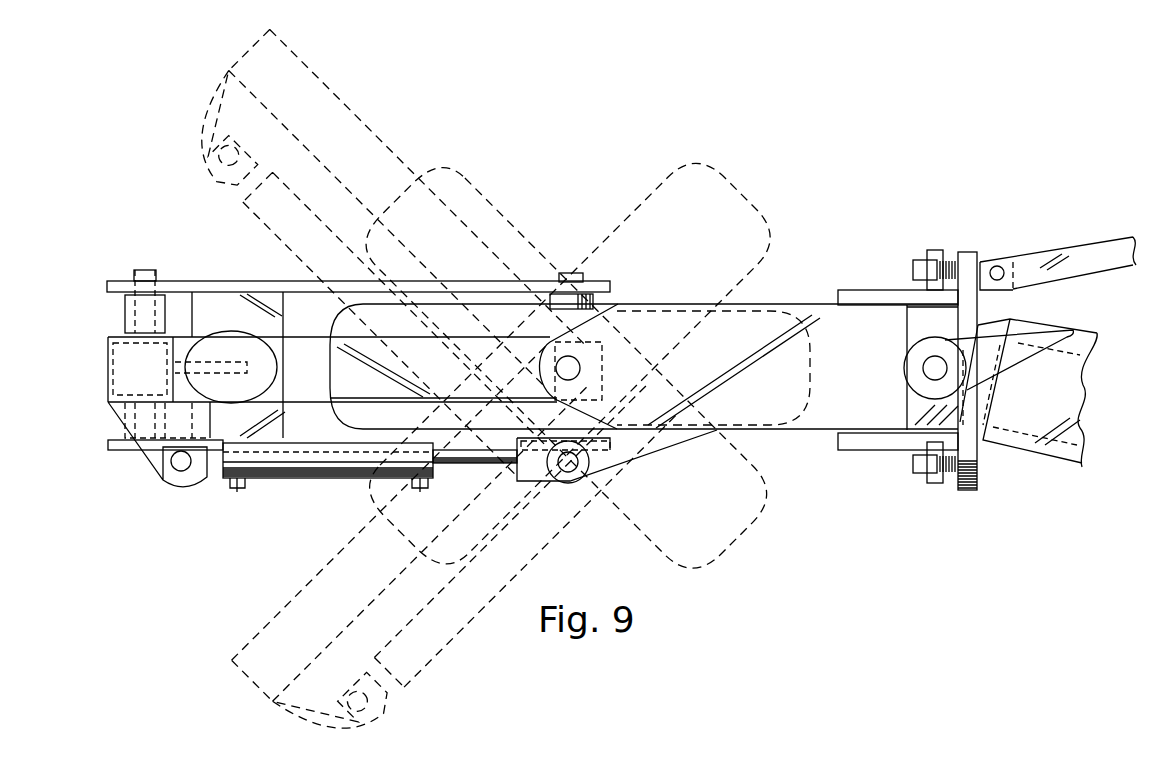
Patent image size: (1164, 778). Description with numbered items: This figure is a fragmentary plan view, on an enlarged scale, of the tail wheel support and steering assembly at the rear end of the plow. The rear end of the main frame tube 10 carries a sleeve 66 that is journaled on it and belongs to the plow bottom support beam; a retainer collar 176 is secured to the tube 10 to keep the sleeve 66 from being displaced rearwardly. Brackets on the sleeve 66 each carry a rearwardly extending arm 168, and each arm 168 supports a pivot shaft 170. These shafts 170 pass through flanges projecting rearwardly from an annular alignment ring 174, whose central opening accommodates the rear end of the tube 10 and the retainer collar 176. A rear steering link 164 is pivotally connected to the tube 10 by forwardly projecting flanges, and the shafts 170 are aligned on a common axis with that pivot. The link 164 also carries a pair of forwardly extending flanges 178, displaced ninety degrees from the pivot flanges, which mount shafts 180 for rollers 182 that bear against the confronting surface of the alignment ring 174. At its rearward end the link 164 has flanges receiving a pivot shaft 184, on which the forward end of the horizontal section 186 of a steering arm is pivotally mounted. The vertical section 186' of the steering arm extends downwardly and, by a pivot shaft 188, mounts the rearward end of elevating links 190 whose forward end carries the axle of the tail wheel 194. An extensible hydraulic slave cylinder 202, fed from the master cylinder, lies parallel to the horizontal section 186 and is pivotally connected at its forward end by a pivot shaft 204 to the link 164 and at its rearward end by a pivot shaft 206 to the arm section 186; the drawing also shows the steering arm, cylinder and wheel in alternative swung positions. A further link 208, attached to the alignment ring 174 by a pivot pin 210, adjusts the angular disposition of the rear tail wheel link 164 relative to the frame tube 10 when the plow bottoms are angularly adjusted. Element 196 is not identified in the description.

The main frame tube 10 is at (992, 394).
The sleeve 66 is at (1084, 444).
The rear steering link 164 is at (827, 318).
The arm 168 is at (1082, 336).
The pivot shaft 170 is at (932, 370).
The annular alignment ring 174 is at (966, 252).
The retainer collar 176 is at (990, 323).
The flanges 178 is at (850, 290).
The shafts 180 is at (935, 250).
The rollers 182 is at (913, 270).
The pivot shaft 184 is at (580, 366).
The horizontal section of steering arm 186 is at (379, 396).
The vertical section of steering arm 186' is at (107, 369).
The pivot shaft 188 is at (146, 270).
The elevating links 190 is at (228, 281).
The tail wheel 194 is at (733, 192).
The tie rod 196 is at (243, 330).
The extensible hydraulic slave cylinder 202 is at (272, 228).
The pivot shaft 204 is at (570, 465).
The pivot shaft 206 is at (173, 465).
The link 208 is at (1070, 256).
The pivot pin 210 is at (998, 266).